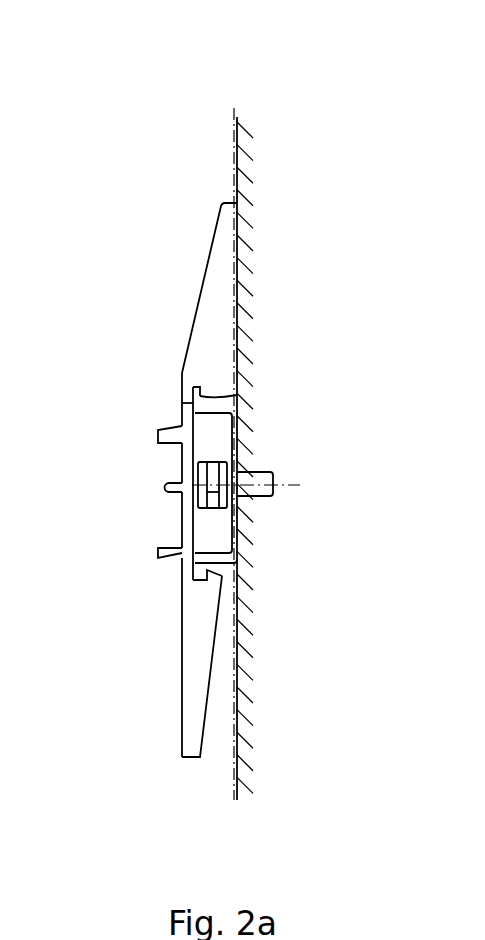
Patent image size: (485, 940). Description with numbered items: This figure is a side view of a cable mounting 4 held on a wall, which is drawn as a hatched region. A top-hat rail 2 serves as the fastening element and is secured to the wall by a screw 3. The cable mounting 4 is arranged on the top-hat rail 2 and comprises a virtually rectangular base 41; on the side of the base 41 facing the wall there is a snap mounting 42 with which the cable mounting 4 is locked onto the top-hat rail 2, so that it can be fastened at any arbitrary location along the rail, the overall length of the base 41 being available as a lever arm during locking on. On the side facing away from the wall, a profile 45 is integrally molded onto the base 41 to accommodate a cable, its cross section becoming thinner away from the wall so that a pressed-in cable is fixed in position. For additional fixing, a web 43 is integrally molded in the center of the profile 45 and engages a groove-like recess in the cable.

The top-hat rail 2 is at (240, 428).
The screw 3 is at (274, 495).
The cable mounting 4 is at (90, 59).
The base 41 is at (213, 303).
The snap mounting 42 is at (218, 388).
The web 43 is at (167, 484).
The profile 45 is at (161, 557).